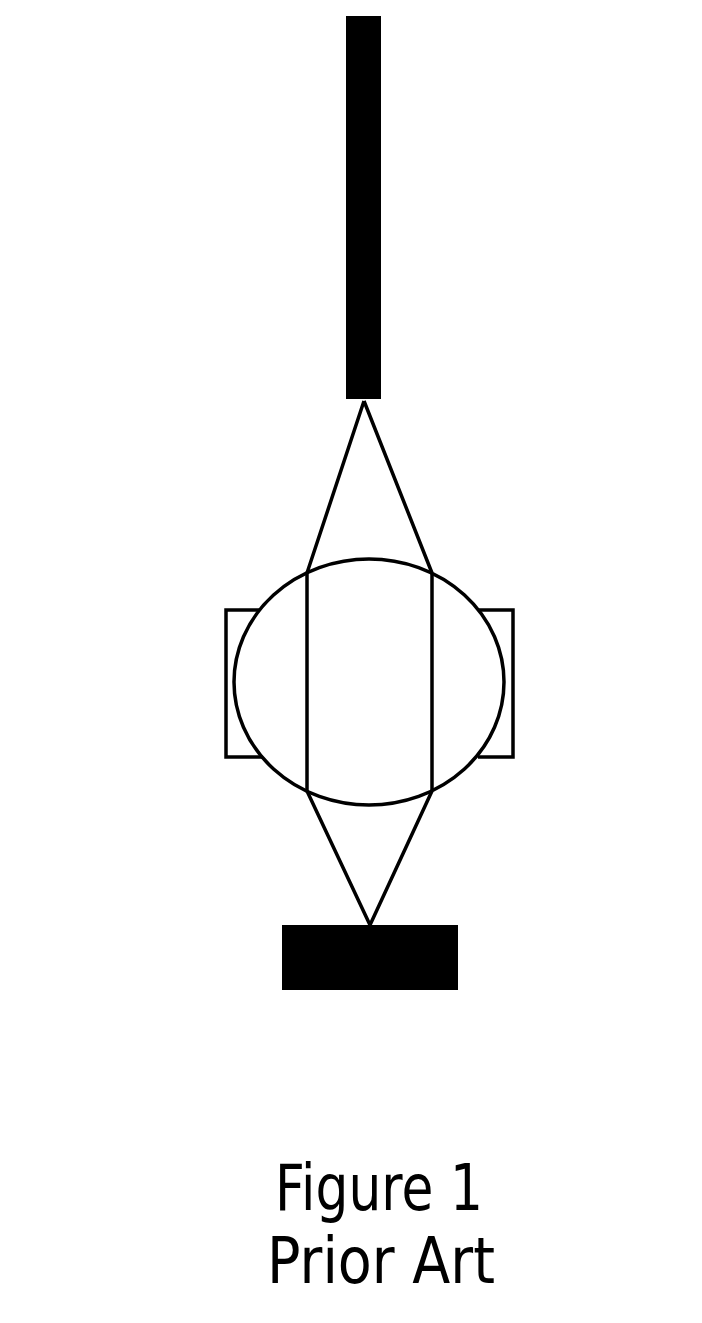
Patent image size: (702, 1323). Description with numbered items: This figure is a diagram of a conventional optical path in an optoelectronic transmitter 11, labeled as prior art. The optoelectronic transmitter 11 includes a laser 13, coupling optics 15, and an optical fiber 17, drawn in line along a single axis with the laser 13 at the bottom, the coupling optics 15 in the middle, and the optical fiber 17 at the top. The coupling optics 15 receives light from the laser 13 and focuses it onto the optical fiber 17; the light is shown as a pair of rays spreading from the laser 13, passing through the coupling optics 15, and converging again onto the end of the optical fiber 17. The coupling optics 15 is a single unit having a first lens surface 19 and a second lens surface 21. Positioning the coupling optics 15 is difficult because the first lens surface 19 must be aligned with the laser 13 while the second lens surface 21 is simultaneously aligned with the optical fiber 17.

The optoelectronic transmitter 11 is at (90, 544).
The laser 13 is at (458, 958).
The coupling optics 15 is at (369, 682).
The optical fiber 17 is at (346, 71).
The first lens surface 19 is at (270, 770).
The second lens surface 21 is at (449, 577).